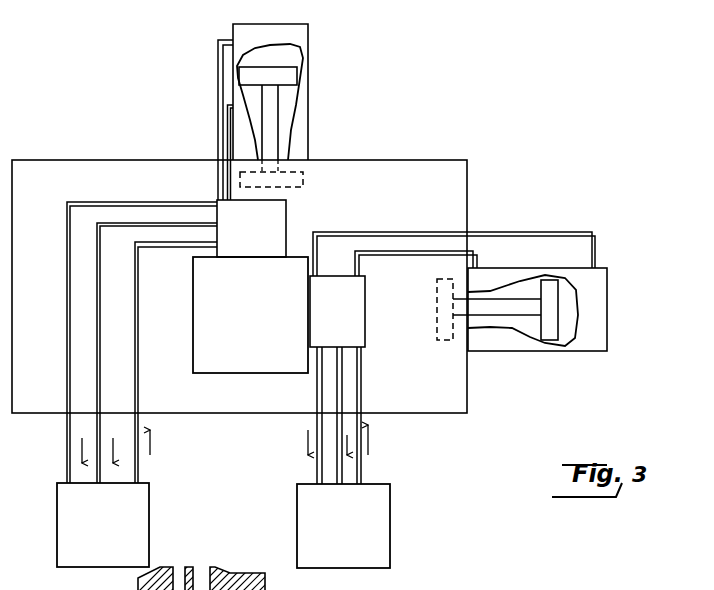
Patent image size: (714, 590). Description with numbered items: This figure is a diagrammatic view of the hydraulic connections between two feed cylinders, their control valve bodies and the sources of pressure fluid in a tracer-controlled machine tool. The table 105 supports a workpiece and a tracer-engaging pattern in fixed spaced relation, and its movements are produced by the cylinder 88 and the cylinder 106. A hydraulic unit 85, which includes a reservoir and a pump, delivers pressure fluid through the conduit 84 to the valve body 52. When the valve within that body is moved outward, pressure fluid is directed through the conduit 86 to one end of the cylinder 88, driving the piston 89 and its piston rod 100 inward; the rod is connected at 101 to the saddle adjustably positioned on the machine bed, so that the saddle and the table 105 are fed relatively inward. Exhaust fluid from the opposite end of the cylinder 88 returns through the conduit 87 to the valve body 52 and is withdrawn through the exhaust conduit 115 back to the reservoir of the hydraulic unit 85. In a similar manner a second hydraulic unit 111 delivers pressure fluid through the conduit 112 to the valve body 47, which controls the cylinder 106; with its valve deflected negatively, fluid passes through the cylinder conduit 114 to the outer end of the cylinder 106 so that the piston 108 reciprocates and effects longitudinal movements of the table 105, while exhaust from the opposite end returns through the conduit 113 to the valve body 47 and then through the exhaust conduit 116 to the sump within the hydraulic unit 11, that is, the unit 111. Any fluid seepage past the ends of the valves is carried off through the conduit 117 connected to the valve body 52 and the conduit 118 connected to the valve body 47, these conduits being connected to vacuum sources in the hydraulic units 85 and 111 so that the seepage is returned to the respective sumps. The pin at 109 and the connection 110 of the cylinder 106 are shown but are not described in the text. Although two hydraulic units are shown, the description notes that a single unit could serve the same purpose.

The hydraulic unit 11 is at (193, 330).
The valve body 47 is at (352, 320).
The valve body 52 is at (278, 221).
The conduit 84 is at (138, 458).
The hydraulic unit 85 is at (132, 528).
The conduit 86 is at (218, 68).
The conduit 87 is at (227, 128).
The cylinder 88 is at (298, 43).
The piston 89 is at (290, 79).
The piston rod 100 is at (275, 113).
The connection to saddle 101 is at (303, 173).
The table 105 is at (447, 193).
The cylinder 106 is at (583, 343).
The piston 108 is at (556, 297).
The conductor 109 is at (527, 313).
The connector 110 is at (445, 340).
The hydraulic unit 111 is at (380, 535).
The conduit 112 is at (361, 468).
The conduit 113 is at (428, 254).
The cylinder conduit 114 is at (561, 236).
The exhaust conduit 115 is at (100, 430).
The exhaust conduit 116 is at (337, 425).
The conduit 117 is at (68, 470).
The conduit 118 is at (317, 470).